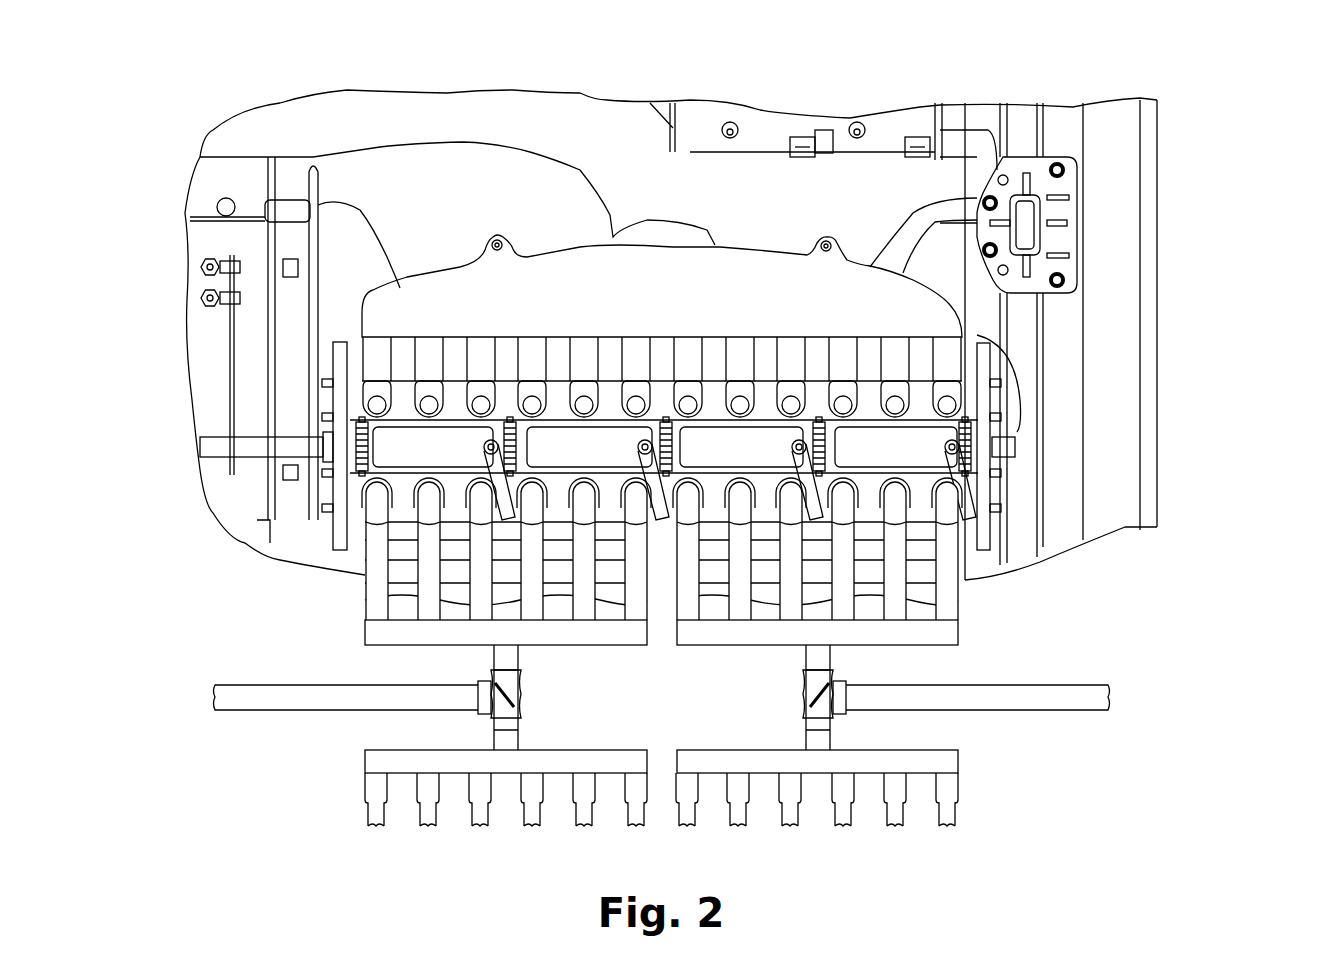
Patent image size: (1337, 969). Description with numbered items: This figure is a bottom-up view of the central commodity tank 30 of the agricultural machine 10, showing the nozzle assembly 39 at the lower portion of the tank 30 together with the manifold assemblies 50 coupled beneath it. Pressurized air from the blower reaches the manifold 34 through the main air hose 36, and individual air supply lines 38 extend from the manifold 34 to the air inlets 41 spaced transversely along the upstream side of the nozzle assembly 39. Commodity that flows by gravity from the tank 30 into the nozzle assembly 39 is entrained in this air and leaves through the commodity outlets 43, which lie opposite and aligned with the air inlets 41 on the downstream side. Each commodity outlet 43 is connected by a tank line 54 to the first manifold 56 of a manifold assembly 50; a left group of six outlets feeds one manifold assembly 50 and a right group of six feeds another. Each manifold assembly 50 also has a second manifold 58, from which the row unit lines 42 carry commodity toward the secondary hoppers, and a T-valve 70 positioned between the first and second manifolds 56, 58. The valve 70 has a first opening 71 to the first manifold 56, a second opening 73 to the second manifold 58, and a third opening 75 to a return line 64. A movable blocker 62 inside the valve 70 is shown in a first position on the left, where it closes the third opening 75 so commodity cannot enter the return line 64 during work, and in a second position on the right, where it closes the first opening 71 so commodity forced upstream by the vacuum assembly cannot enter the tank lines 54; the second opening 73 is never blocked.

The agricultural machine 10 is at (1232, 121).
The central commodity tank 30 is at (878, 130).
The manifold 34 is at (768, 270).
The main air hose 36 is at (600, 128).
The air supply lines 38 is at (370, 360).
The nozzle assembly 39 is at (396, 448).
The air inlets 41 is at (357, 403).
The commodity outlets 43 is at (375, 514).
The row unit lines 42 is at (370, 790).
The manifold assembly 50 is at (279, 737).
The tank lines 54 is at (372, 568).
The first manifold 56 is at (378, 631).
The second manifold 58 is at (372, 761).
The movable blocker 62 is at (522, 703).
The return line 64 is at (230, 700).
The valve 70 is at (520, 687).
The first opening 71 is at (505, 650).
The second opening 73 is at (504, 750).
The third opening 75 is at (478, 699).